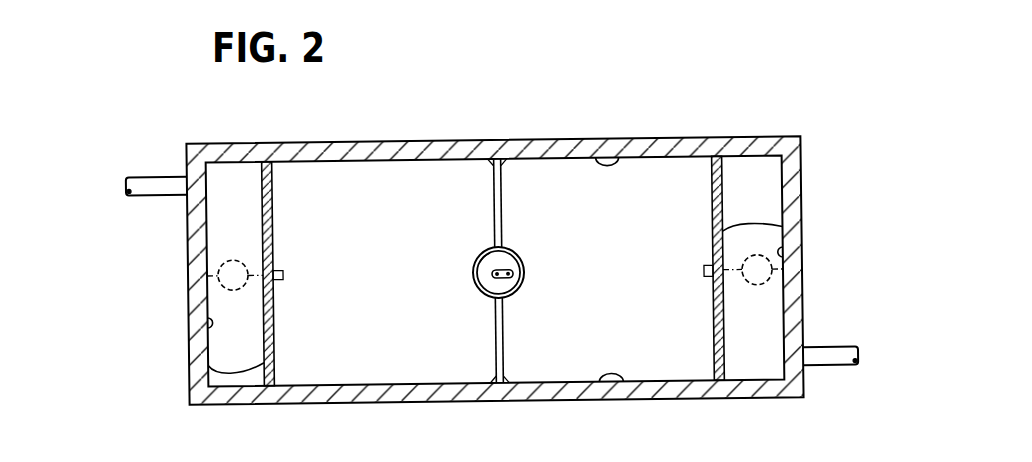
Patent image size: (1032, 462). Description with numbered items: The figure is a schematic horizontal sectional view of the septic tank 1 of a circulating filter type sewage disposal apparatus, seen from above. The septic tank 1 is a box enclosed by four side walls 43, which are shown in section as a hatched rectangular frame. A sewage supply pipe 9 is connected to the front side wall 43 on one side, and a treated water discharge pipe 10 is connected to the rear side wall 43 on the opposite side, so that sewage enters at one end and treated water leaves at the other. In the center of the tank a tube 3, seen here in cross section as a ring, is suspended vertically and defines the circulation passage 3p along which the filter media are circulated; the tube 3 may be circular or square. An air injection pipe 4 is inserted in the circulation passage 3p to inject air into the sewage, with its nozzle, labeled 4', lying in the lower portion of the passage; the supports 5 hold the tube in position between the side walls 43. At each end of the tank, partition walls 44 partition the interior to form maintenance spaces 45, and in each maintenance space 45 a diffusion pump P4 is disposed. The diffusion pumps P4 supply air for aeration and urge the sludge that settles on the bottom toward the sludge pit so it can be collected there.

The septic tank 1 is at (750, 139).
The tube 3 is at (524, 278).
The circulation passage 3p is at (486, 267).
The air injection pipe 4 is at (528, 259).
The valve slot 4' is at (462, 291).
The shaft 5 is at (503, 192).
The sewage supply pipe 9 is at (140, 197).
The treated water discharge pipe 10 is at (838, 366).
The side wall 43 is at (622, 160).
The partition wall 44 is at (207, 362).
The maintenance space 45 is at (249, 215).
The diffusion pump P4 is at (846, 307).